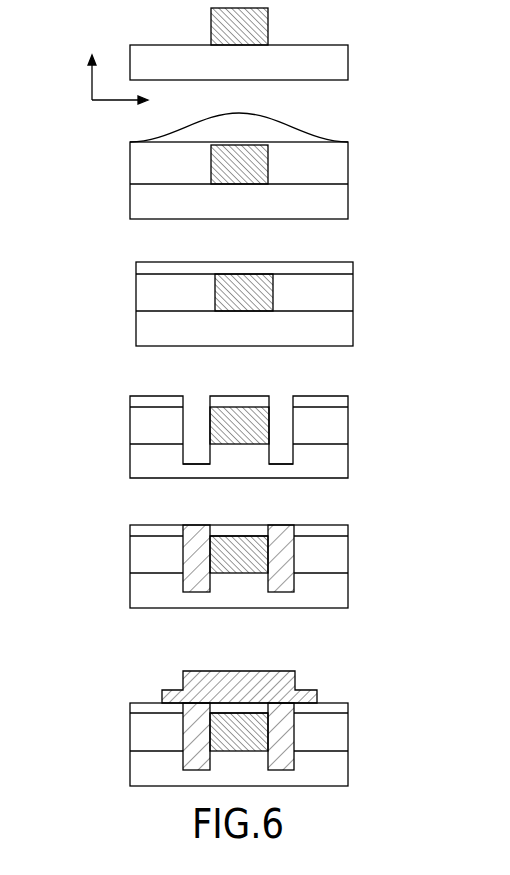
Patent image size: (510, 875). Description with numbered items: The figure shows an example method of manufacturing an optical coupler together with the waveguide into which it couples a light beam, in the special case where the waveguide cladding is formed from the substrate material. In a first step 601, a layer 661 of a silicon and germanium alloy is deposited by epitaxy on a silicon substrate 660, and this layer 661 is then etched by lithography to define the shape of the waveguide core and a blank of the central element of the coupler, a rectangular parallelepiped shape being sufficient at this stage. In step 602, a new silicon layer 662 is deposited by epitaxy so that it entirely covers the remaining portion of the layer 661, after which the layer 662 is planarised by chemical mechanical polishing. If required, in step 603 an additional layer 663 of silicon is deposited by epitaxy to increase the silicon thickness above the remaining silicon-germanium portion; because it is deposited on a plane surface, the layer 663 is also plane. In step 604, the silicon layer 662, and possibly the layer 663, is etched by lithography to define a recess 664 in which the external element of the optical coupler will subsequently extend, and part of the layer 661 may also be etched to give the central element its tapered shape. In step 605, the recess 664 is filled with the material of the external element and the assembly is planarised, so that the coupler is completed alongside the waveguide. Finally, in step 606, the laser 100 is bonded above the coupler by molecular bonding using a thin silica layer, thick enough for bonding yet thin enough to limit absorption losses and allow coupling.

The laser 100 is at (295, 675).
The silicon substrate 660 is at (338, 63).
The layer of a silicon and germanium alloy 661 is at (268, 14).
The new silicon layer 662 is at (337, 160).
The additional layer of silicon 663 is at (337, 267).
The recess 664 is at (282, 417).
The first step 601 is at (70, 94).
The step 602 is at (110, 194).
The step 603 is at (110, 315).
The step 604 is at (110, 447).
The step 605 is at (110, 578).
The step 606 is at (110, 748).